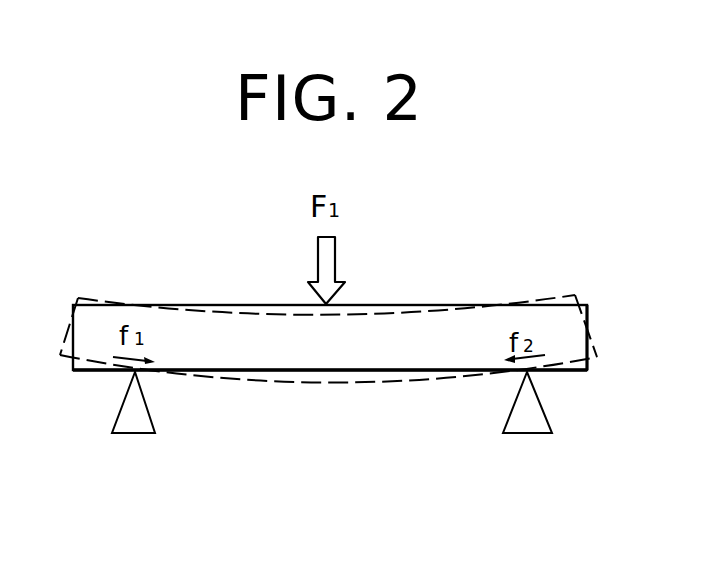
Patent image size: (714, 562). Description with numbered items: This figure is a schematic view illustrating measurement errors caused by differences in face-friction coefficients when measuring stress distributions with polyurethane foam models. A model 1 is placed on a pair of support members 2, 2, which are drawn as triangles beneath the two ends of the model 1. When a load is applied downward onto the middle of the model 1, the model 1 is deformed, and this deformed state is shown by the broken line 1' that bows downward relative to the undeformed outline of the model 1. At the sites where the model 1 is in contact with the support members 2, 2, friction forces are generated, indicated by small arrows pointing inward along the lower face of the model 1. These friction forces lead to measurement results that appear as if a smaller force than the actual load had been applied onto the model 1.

The model 1 is at (330, 295).
The broken line 1' is at (328, 373).
The support members 2 is at (127, 415).